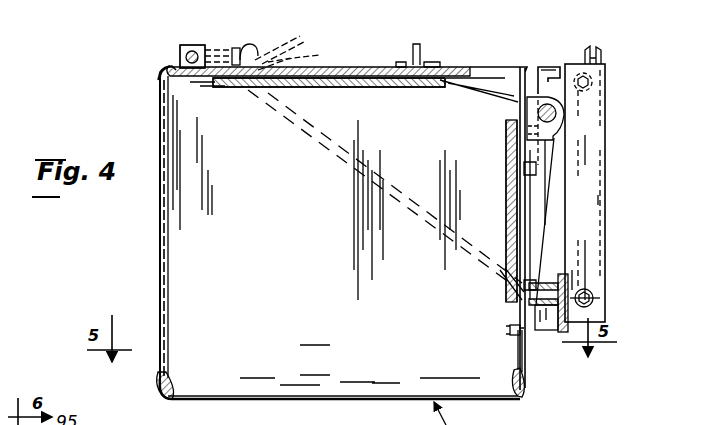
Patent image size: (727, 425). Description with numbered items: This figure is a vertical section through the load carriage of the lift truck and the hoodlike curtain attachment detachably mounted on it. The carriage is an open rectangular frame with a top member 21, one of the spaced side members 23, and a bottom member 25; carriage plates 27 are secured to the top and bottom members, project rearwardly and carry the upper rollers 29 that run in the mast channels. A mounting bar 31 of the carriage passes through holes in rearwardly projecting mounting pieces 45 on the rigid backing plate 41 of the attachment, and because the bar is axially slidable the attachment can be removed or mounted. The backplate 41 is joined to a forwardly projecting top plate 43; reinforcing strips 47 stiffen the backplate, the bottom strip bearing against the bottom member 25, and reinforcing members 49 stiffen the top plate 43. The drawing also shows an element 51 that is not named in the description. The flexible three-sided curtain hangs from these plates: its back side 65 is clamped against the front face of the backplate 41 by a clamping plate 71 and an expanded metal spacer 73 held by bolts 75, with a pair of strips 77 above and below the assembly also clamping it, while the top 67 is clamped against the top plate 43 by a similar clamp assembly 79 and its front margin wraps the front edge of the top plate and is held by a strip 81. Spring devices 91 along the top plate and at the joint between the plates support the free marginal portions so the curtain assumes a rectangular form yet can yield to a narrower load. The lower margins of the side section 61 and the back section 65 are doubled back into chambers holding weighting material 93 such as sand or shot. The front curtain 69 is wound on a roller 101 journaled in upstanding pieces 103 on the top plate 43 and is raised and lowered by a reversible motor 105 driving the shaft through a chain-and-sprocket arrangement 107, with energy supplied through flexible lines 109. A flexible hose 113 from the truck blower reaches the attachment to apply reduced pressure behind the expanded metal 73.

The top member 21 is at (548, 66).
The side member 23 is at (540, 97).
The bottom member 25 is at (558, 330).
The carriage plate 27 is at (597, 252).
The upper roller 29 is at (592, 82).
The mounting bar 31 is at (557, 113).
The backing plate 41 is at (518, 243).
The top plate 43 is at (364, 72).
The mounting piece 45 is at (538, 200).
The reinforcing strip 47 is at (538, 170).
The reinforcing member 49 is at (418, 48).
The diagonal brace 51 is at (415, 225).
The side section 61 is at (322, 300).
The back side 65 is at (518, 346).
The top 67 is at (462, 84).
The front curtain 69 is at (167, 258).
The clamping plate 71 is at (508, 184).
The expanded metal spacer 73 is at (514, 210).
The bolt 75 is at (498, 285).
The strip 77 is at (508, 330).
The clamp assembly 79 is at (352, 90).
The strip 81 is at (170, 68).
The spring device 91 is at (511, 88).
The weighting material 93 is at (172, 388).
The roller 101 is at (190, 53).
The upstanding piece 103 is at (203, 48).
The reversible motor 105 is at (262, 50).
The chain-and-sprocket arrangement 107 is at (240, 48).
The flexible line 109 is at (312, 56).
The flexible hose 113 is at (598, 50).